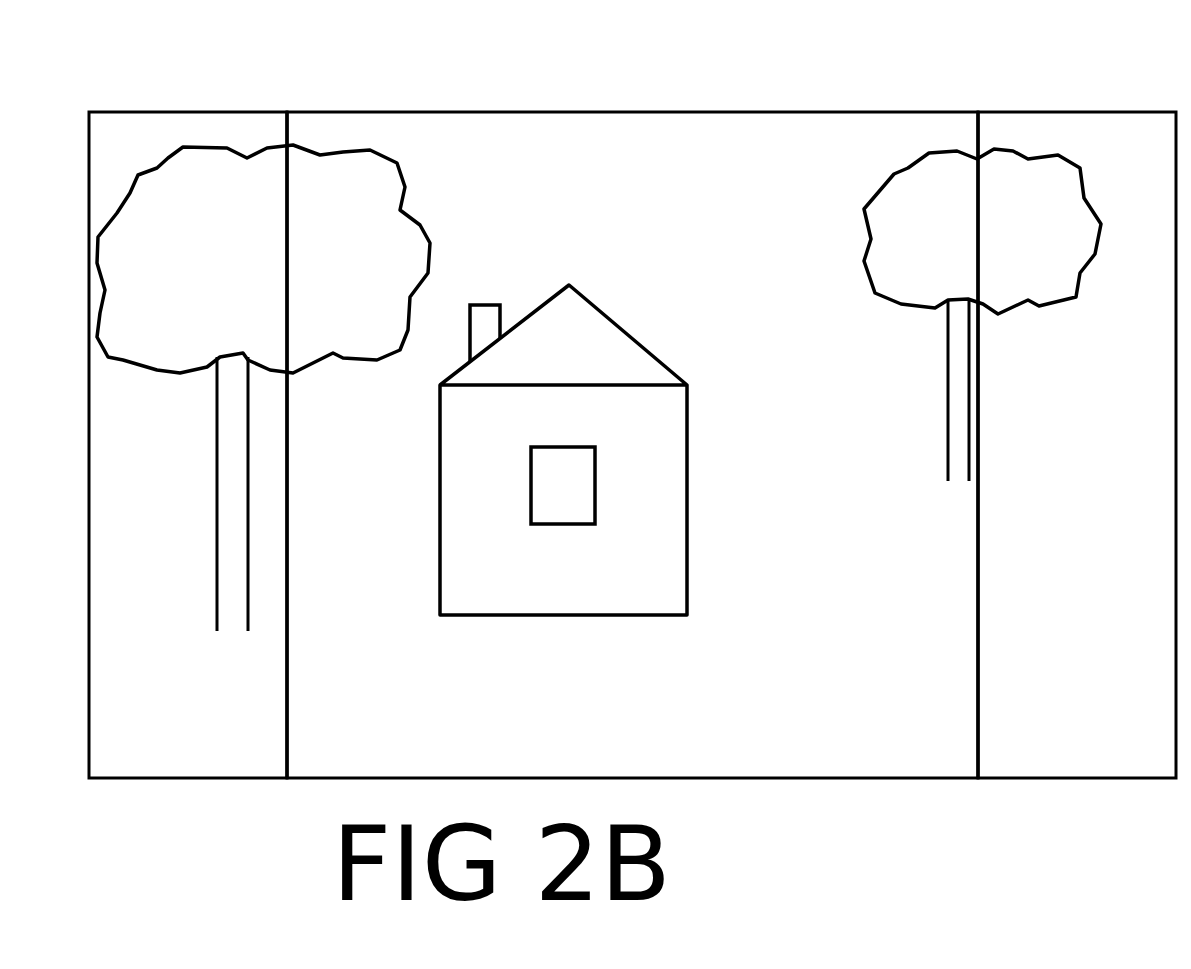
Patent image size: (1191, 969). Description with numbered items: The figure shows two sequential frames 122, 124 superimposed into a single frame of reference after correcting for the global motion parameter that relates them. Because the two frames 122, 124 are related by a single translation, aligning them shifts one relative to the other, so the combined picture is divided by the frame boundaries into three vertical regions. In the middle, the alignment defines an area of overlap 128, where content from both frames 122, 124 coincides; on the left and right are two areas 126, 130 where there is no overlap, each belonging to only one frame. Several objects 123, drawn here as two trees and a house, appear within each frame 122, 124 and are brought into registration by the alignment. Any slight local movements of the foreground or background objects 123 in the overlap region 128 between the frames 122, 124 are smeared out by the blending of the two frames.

The frame 122 is at (332, 111).
The objects 123 is at (420, 218).
The frame 124 is at (1071, 111).
The area where there is no overlap 126 is at (210, 734).
The area of overlap 128 is at (640, 733).
The area where there is no overlap 130 is at (1101, 675).